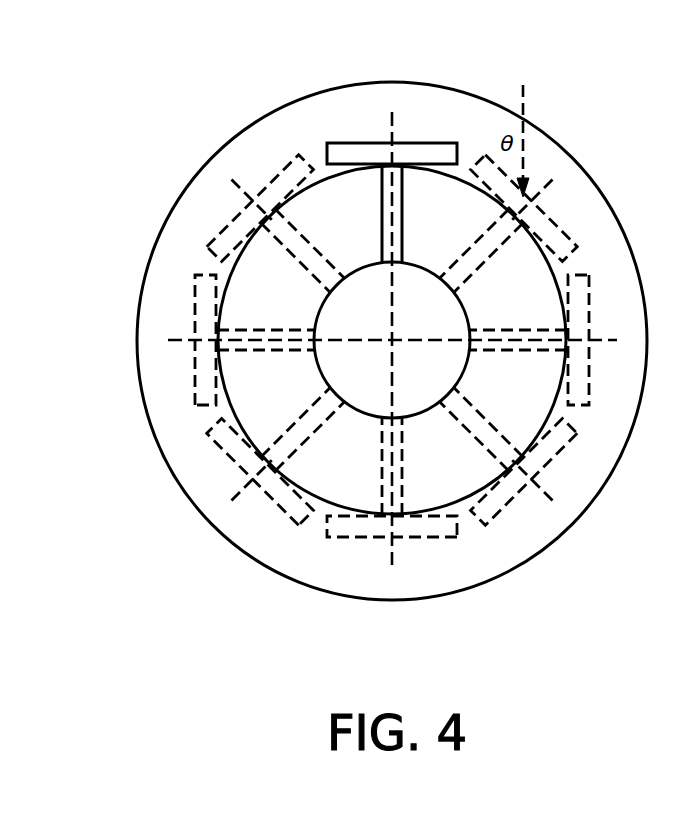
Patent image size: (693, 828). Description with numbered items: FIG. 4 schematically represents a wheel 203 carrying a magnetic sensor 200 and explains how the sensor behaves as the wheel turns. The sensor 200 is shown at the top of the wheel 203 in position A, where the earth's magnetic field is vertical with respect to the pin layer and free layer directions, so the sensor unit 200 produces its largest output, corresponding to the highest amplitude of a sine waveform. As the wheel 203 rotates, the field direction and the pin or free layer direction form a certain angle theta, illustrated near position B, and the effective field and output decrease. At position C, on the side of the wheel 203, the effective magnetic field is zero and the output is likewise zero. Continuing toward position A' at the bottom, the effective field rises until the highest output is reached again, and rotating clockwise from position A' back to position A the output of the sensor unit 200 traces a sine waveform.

The magnetic sensor 200 is at (342, 150).
The wheel 203 is at (231, 140).
The position A is at (393, 302).
The position A' is at (392, 529).
The oblique axis B is at (499, 223).
The position C is at (424, 341).